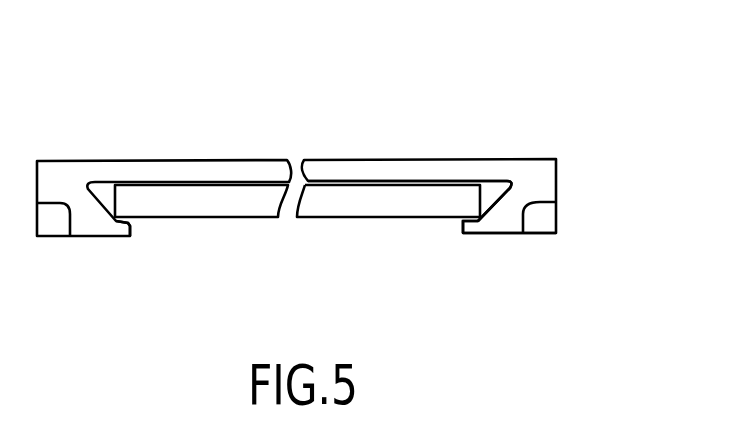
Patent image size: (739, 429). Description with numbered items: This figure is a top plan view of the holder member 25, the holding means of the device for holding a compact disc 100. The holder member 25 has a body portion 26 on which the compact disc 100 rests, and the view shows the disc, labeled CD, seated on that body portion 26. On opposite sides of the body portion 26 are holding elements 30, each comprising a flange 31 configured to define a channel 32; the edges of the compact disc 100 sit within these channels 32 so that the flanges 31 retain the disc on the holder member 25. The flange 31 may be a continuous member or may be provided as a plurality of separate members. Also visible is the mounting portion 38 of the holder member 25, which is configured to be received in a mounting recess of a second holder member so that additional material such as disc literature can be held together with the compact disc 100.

The holder member 25 is at (553, 158).
The body portion 26 is at (90, 160).
The holding element 30 is at (505, 233).
The flange 31 is at (128, 236).
The channel 32 is at (490, 190).
The mounting portion 38 is at (557, 178).
The compact disc 100 is at (210, 218).
The compact disc CD is at (237, 203).